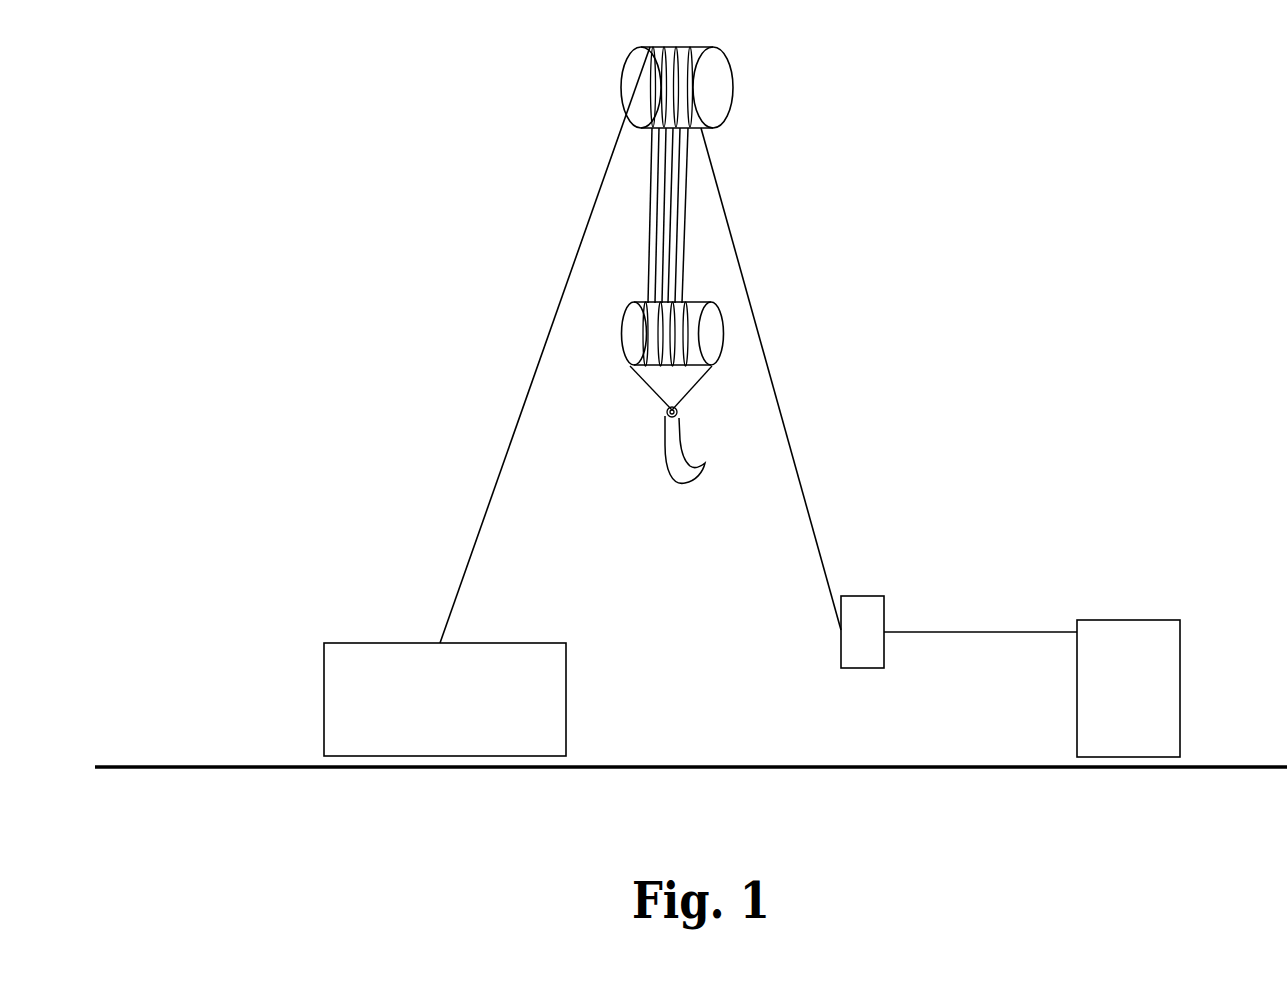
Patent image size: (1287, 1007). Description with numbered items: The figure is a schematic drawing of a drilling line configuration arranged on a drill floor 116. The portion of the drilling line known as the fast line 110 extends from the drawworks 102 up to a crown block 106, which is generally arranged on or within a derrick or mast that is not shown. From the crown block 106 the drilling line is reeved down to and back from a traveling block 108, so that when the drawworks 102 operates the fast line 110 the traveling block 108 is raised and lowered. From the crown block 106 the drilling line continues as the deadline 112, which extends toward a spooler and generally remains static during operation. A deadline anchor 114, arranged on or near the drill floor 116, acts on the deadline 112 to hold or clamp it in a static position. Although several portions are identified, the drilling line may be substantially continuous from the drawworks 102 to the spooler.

The drawworks 102 is at (372, 643).
The crown block 106 is at (733, 83).
The traveling block 108 is at (723, 330).
The fast line 110 is at (560, 302).
The deadline 112 is at (789, 450).
The deadline anchor 114 is at (862, 596).
The drill floor 116 is at (1042, 769).